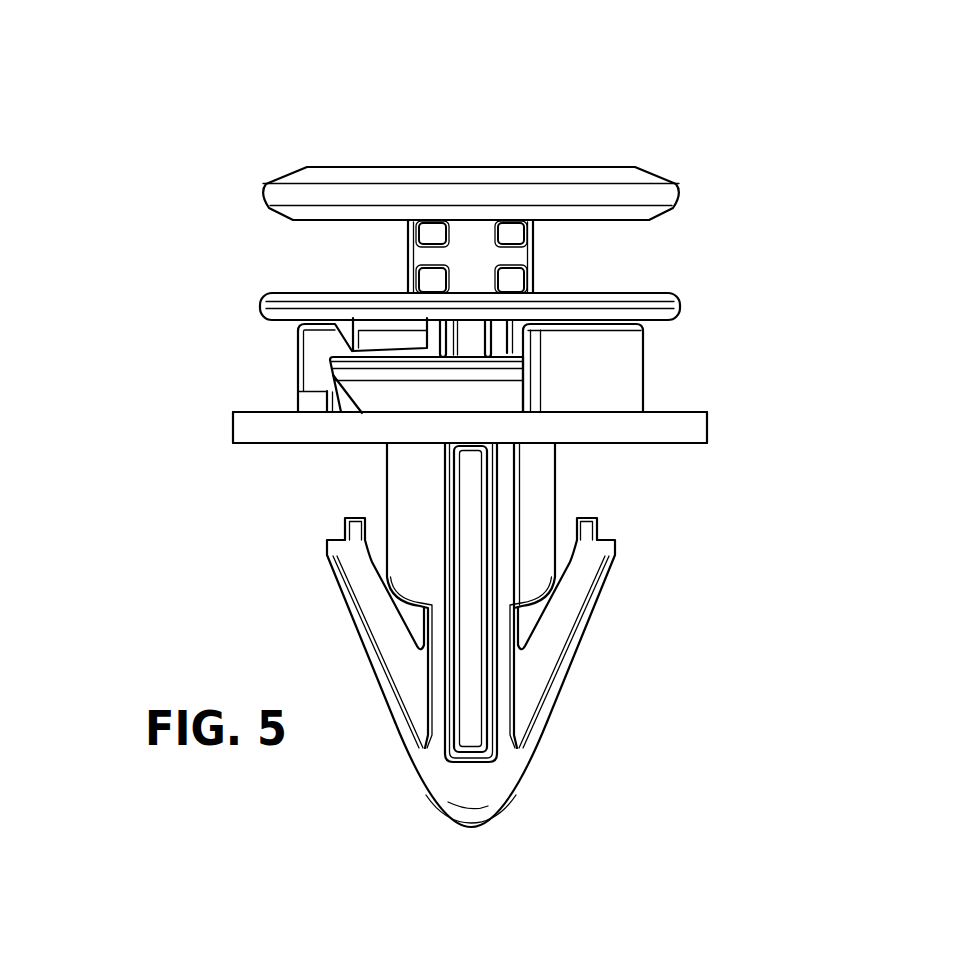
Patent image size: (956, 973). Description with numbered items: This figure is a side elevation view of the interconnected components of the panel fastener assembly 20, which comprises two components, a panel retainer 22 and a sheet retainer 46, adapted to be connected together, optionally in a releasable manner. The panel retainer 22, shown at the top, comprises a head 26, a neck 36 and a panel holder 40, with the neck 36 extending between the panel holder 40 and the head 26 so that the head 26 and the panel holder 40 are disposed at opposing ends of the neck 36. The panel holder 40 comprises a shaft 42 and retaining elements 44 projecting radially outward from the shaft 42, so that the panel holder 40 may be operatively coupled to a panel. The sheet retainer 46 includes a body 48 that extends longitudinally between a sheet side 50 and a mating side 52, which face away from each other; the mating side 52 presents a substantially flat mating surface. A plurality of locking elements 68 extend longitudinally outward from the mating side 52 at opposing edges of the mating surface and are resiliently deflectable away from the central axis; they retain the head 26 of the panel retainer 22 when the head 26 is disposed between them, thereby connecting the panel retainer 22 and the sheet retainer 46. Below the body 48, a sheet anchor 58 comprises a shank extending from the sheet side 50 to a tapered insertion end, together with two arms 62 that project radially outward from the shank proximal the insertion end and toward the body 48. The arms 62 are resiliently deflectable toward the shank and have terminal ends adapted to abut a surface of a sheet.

The panel fastener assembly 20 is at (112, 134).
The panel retainer 22 is at (721, 246).
The head 26 is at (377, 382).
The neck 36 is at (483, 344).
The panel holder 40 is at (472, 172).
The shaft 42 is at (513, 258).
The retaining element 44 is at (273, 193).
The sheet retainer 46 is at (697, 615).
The body 48 is at (693, 427).
The sheet side 50 is at (687, 445).
The mating side 52 is at (687, 410).
The sheet anchor 58 is at (505, 763).
The arms 62 is at (358, 565).
The locking elements 68 is at (323, 345).